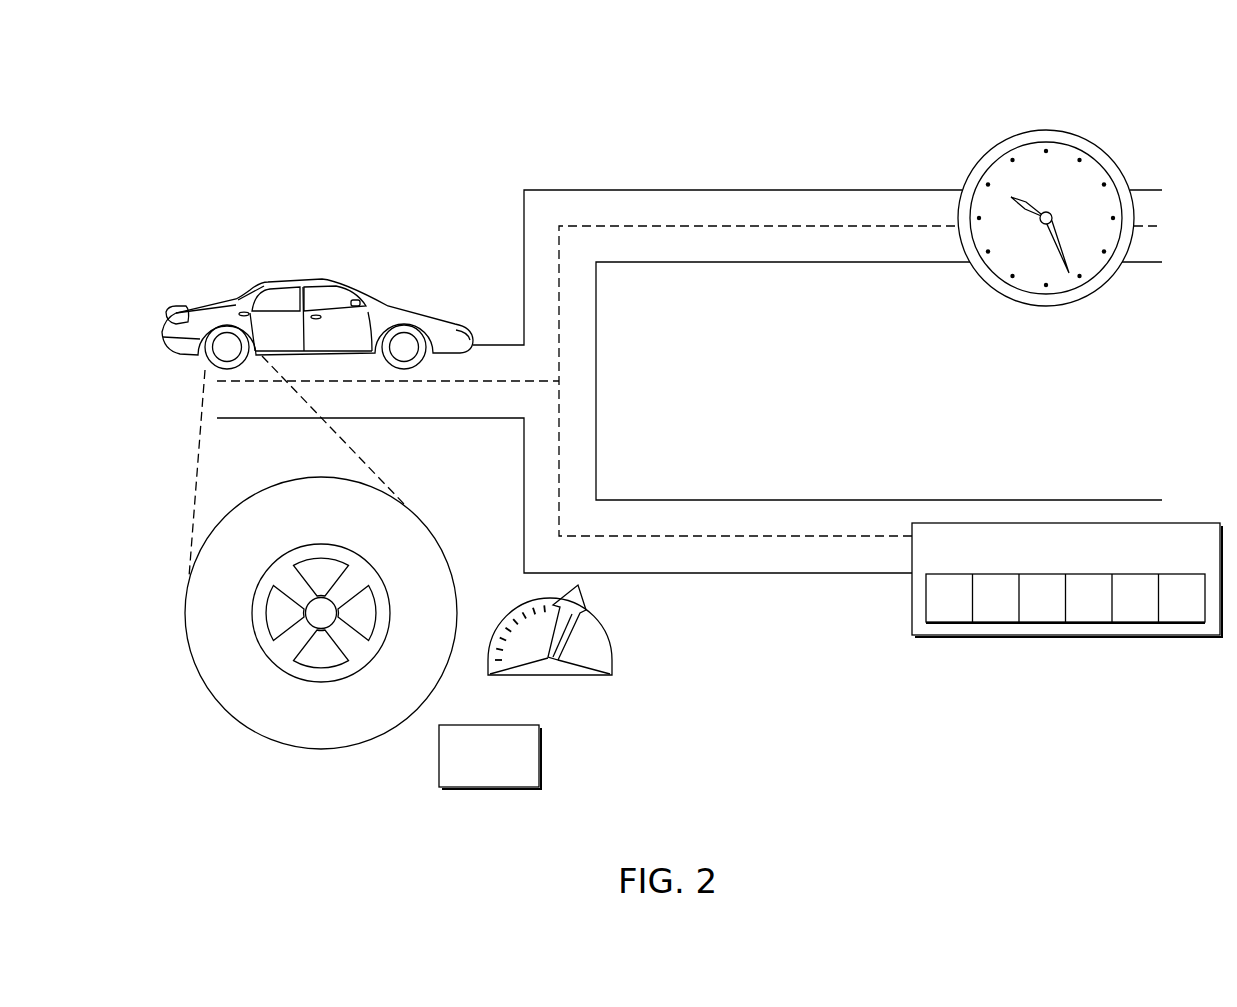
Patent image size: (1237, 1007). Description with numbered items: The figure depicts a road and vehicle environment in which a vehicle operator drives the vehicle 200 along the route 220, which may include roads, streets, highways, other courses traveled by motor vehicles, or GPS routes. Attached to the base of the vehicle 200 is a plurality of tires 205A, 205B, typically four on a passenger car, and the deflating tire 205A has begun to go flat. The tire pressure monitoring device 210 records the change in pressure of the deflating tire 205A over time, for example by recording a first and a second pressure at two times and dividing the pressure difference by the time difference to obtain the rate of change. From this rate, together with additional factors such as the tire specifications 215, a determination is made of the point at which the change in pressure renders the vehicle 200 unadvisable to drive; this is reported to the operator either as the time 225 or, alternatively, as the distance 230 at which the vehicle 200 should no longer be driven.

The vehicle 200 is at (317, 276).
The deflating tire 205A is at (306, 586).
The tire 205B is at (388, 431).
The tire pressure monitoring device 210 is at (610, 630).
The tire specifications 215 is at (553, 750).
The route 220 is at (860, 381).
The time 225 is at (1017, 185).
The distance 230 is at (1056, 630).